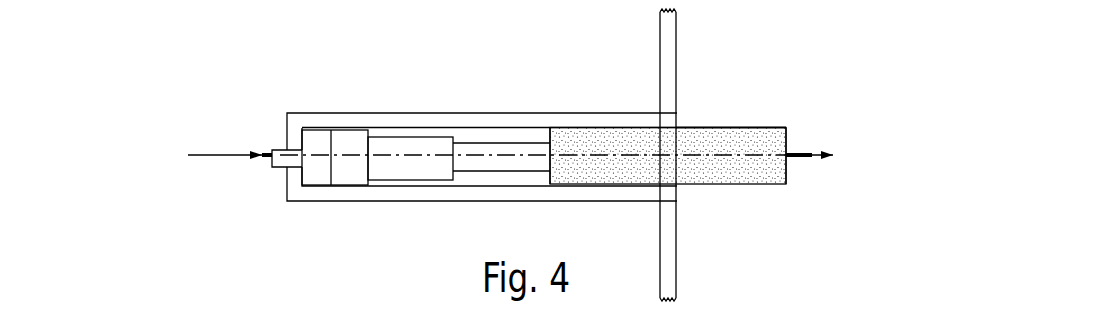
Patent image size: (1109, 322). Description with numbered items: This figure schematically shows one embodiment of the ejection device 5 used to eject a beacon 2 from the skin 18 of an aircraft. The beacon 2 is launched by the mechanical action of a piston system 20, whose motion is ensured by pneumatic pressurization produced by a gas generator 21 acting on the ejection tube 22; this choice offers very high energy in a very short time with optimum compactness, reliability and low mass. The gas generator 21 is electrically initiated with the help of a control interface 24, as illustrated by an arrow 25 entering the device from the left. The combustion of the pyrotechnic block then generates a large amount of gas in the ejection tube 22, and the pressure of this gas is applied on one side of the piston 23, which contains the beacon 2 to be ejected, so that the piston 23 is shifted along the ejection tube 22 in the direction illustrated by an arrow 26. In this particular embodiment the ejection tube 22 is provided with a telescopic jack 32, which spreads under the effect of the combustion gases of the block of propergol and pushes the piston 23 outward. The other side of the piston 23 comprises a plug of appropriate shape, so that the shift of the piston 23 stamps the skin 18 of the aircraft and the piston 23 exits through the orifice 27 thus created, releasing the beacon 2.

The beacon 2 is at (742, 126).
The ejection device 5 is at (349, 98).
The skin 18 is at (667, 37).
The piston system 20 is at (466, 106).
The gas generator 21 is at (314, 137).
The ejection tube 22 is at (556, 110).
The piston 23 is at (621, 127).
The control interface 24 is at (273, 169).
The arrow 25 is at (213, 163).
The arrow 26 is at (803, 161).
The orifice 27 is at (686, 117).
The telescopic jack 32 is at (417, 175).